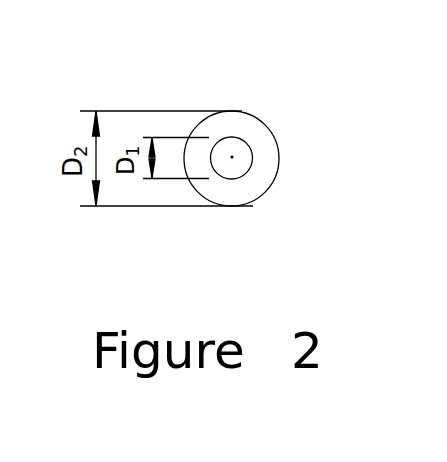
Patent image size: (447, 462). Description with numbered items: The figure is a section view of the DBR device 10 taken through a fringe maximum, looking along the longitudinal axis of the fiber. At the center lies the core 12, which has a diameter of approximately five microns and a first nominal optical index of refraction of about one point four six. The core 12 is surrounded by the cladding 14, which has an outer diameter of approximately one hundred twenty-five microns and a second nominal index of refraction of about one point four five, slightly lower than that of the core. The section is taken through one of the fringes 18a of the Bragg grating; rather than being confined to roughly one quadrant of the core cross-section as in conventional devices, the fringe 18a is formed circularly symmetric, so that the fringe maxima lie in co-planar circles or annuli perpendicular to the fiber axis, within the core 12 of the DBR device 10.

The DBR device 10 is at (280, 151).
The cladding 14 is at (265, 145).
The core 12 is at (253, 165).
The fringe maximum 18a is at (233, 165).